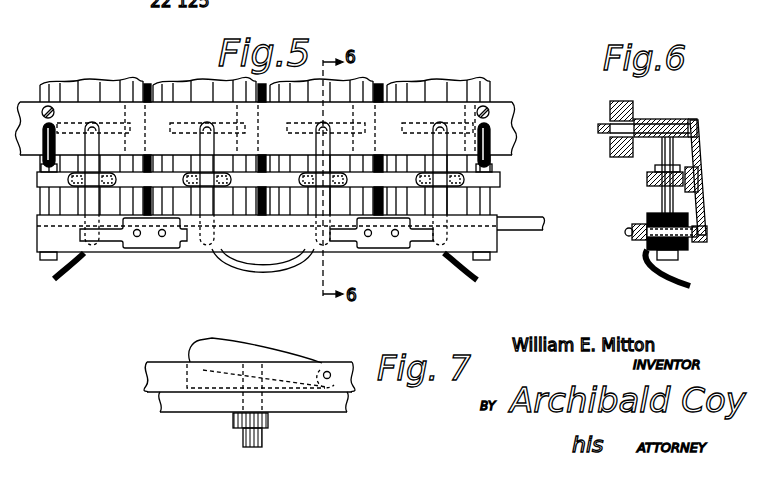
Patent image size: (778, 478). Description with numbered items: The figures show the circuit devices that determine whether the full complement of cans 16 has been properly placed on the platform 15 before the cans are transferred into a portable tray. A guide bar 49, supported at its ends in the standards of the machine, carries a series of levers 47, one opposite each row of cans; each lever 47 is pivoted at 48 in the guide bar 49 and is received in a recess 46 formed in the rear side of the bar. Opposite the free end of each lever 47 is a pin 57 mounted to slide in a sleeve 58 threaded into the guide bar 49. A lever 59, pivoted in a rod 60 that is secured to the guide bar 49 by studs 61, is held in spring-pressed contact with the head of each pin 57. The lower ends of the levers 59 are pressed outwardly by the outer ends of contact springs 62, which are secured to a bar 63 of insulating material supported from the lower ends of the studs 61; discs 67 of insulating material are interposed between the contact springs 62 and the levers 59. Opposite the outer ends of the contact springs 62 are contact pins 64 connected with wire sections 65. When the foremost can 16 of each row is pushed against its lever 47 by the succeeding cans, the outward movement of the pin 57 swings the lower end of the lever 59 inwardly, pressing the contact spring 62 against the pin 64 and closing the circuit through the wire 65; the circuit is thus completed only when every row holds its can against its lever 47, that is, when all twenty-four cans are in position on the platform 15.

In FIG. 5, the platform 15 is at (544, 226).
In FIG. 5, the cans 16 is at (65, 88).
In FIG. 6, the recesses 46 is at (612, 148).
In FIG. 7, the recesses 46 is at (190, 362).
In FIG. 5, the levers 47 is at (207, 117).
In FIG. 6, the levers 47 is at (600, 128).
In FIG. 7, the levers 47 is at (232, 352).
In FIG. 6, the pivot 48 is at (620, 101).
In FIG. 7, the pivot 48 is at (328, 372).
In FIG. 5, the guide bar 49 is at (505, 106).
In FIG. 6, the guide bar 49 is at (620, 158).
In FIG. 7, the guide bar 49 is at (160, 378).
In FIG. 6, the pin 57 is at (650, 130).
In FIG. 7, the pin 57 is at (243, 438).
In FIG. 5, the sleeve 58 is at (438, 128).
In FIG. 6, the sleeve 58 is at (692, 122).
In FIG. 7, the sleeve 58 is at (268, 420).
In FIG. 5, the levers 59 is at (433, 146).
In FIG. 6, the levers 59 is at (702, 150).
In FIG. 5, the rod 60 is at (483, 183).
In FIG. 6, the rod 60 is at (690, 182).
In FIG. 5, the studs 61 is at (43, 160).
In FIG. 6, the studs 61 is at (663, 156).
In FIG. 5, the contact springs 62 is at (152, 238).
In FIG. 6, the contact springs 62 is at (690, 245).
In FIG. 5, the bar of insulating material 63 is at (480, 237).
In FIG. 6, the bar of insulating material 63 is at (647, 220).
In FIG. 6, the contact pins 64 is at (645, 250).
In FIG. 5, the wire sections 65 is at (55, 280).
In FIG. 6, the wire sections 65 is at (686, 290).
In FIG. 6, the discs of insulating material 67 is at (708, 240).